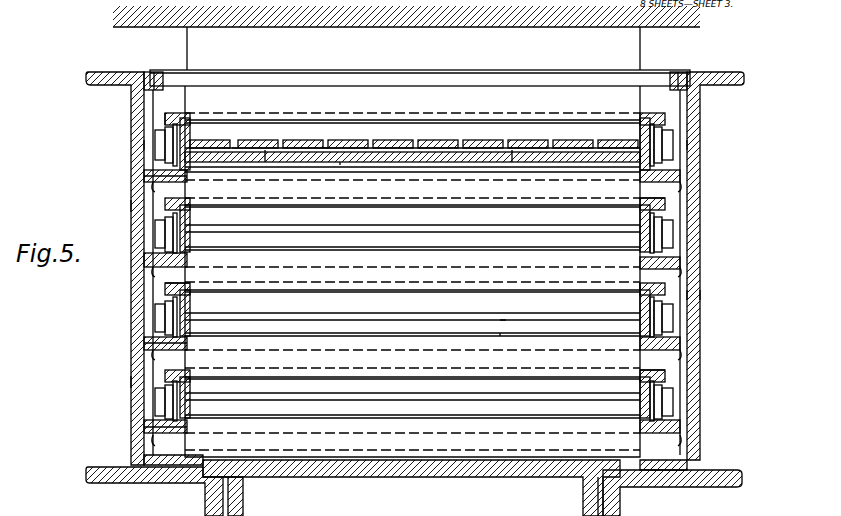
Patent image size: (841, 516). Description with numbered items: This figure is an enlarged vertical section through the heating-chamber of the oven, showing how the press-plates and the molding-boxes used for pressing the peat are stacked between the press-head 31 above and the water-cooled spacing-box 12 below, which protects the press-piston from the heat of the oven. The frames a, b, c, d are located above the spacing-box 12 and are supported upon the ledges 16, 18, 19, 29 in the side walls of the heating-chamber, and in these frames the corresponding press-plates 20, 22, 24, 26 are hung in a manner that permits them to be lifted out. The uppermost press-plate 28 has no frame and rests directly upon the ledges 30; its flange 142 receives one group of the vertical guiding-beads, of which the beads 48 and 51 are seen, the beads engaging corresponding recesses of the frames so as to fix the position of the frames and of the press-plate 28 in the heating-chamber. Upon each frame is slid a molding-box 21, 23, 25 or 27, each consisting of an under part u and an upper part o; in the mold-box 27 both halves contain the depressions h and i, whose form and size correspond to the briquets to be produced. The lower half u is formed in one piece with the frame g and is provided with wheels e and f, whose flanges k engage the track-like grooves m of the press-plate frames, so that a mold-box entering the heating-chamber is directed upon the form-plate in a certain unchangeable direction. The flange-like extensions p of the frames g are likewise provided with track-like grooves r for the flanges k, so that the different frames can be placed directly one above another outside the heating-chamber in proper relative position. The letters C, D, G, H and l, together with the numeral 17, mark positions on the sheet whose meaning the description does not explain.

The spacing-box 12 is at (414, 488).
The ledge 16 is at (142, 444).
The side wall 17 is at (144, 204).
The ledge 18 is at (150, 358).
The ledge 19 is at (150, 275).
The press-plate 20 is at (412, 439).
The molding-box 21 is at (412, 397).
The press-plate 22 is at (412, 355).
The molding-box 23 is at (412, 313).
The press-plate 24 is at (412, 271).
The molding-box 25 is at (412, 227).
The press-plate 26 is at (412, 271).
The molding-box 27 is at (412, 146).
The uppermost press-plate 28 is at (337, 88).
The ledge 29 is at (150, 186).
The ledge 30 is at (145, 96).
The press-head 31 is at (406, 38).
The guiding-bead 48 is at (144, 380).
The guiding-bead 51 is at (688, 300).
The flange of press-plate 28 142 is at (174, 80).
The left frame member C is at (128, 98).
The right frame member D is at (706, 98).
The left side G is at (126, 145).
The right side H is at (706, 145).
The frame a is at (145, 428).
The frame b is at (145, 345).
The frame c is at (145, 259).
The frame d is at (145, 178).
The wheel e is at (160, 143).
The wheel f is at (668, 152).
The frame g is at (190, 118).
The depression h is at (268, 165).
The depression i is at (414, 134).
The flange k is at (187, 176).
The gap l is at (272, 150).
The track-like groove m is at (187, 343).
The upper part of molding-box o is at (414, 220).
The flange-like extension p is at (165, 288).
The track-like groove r is at (176, 118).
The under part of molding-box u is at (342, 166).